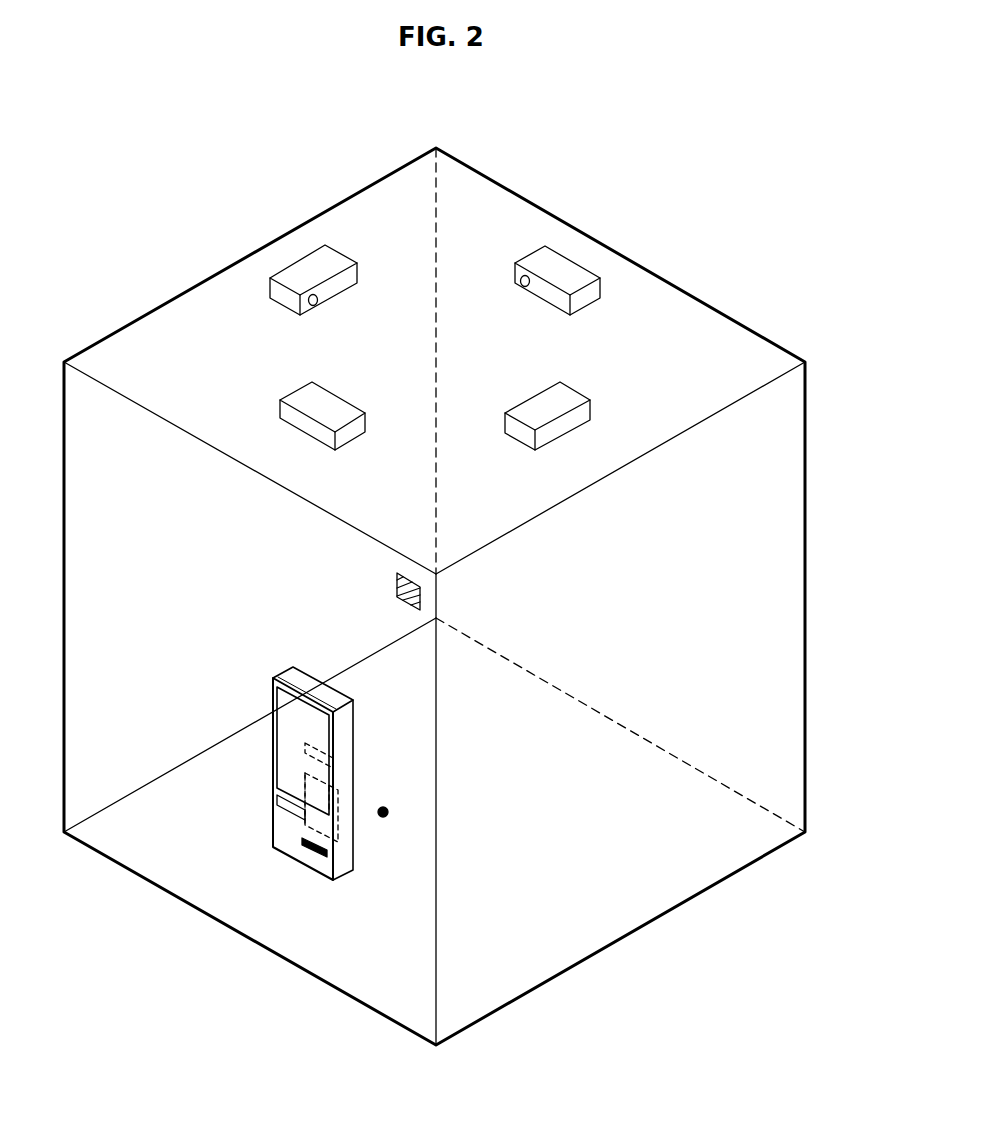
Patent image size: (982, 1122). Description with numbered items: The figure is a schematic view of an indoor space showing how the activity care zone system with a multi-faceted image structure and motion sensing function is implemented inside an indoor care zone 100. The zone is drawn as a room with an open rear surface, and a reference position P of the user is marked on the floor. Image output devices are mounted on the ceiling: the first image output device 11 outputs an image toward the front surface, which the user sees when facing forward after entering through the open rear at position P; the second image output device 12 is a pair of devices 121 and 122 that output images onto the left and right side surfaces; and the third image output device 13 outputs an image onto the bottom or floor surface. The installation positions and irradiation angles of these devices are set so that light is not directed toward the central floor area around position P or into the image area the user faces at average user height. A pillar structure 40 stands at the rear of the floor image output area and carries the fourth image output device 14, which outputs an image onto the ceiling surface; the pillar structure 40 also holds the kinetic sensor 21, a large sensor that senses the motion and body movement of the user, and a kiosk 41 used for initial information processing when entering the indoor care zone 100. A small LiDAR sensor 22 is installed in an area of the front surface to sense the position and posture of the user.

The indoor care zone 100 is at (787, 295).
The second image output device 12 is at (358, 107).
The second image output device 121 is at (303, 262).
The second image output device 122 is at (532, 408).
The third image output device 13 is at (563, 272).
The first image output device 11 is at (300, 398).
The LiDAR sensor 22 is at (397, 585).
The pillar structure 40 is at (339, 790).
The kiosk 41 is at (288, 717).
The kinetic sensor 21 is at (322, 753).
The fourth image output device 14 is at (327, 828).
The reference position P is at (388, 812).